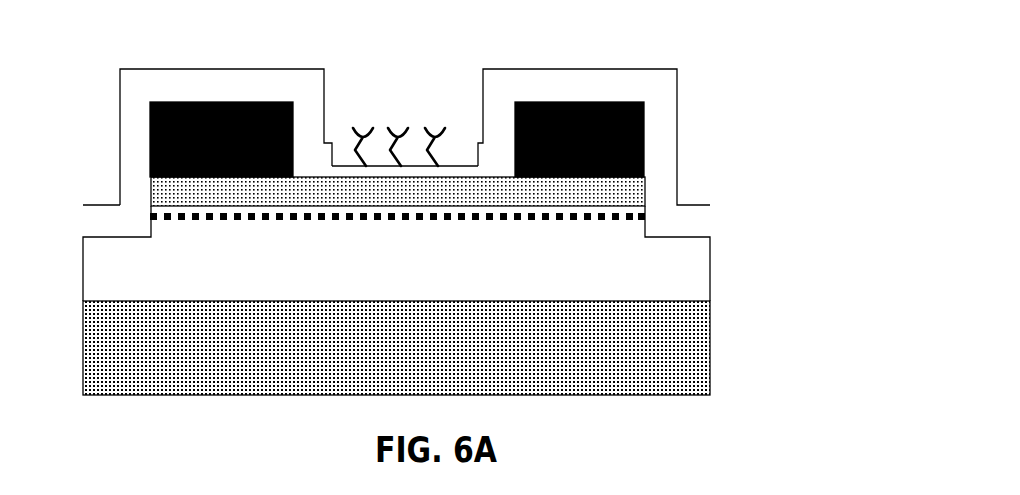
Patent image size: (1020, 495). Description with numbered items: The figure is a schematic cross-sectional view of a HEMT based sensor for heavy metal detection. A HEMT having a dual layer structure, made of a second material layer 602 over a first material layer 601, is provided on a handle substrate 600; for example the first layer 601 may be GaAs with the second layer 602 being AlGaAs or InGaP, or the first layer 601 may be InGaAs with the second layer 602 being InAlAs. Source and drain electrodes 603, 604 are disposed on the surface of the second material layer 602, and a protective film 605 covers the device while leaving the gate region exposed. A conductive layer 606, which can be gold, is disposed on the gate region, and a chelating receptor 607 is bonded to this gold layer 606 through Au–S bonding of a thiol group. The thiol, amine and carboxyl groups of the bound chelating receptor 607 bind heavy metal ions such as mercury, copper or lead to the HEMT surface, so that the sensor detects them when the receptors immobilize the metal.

The handle substrate 600 is at (655, 358).
The first material layer 601 is at (650, 275).
The second material layer 602 is at (612, 195).
The source electrode 603 is at (187, 123).
The drain electrode 604 is at (608, 147).
The protective film 605 is at (583, 85).
The conductive layer 606 is at (453, 165).
The chelating receptor 607 is at (377, 127).